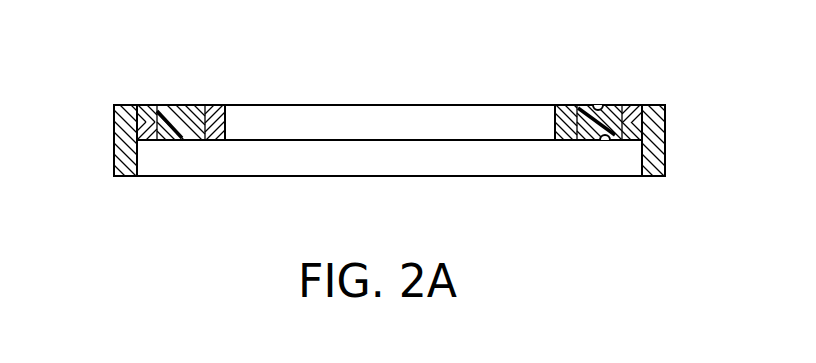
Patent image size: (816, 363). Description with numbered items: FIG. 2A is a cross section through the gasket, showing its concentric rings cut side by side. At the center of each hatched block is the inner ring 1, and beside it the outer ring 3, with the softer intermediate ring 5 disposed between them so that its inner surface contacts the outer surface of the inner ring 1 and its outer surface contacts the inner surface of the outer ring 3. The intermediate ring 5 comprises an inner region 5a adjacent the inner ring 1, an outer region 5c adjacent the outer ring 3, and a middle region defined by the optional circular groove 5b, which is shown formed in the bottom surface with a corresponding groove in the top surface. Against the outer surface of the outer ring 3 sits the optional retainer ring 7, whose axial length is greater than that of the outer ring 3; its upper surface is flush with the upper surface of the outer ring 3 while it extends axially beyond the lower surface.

The inner ring 1 is at (219, 105).
The outer ring 3 is at (148, 105).
The intermediate ring 5 is at (356, 143).
The inner region 5a is at (198, 141).
The circular groove 5b is at (178, 105).
The outer region 5c is at (160, 141).
The retainer ring 7 is at (122, 147).